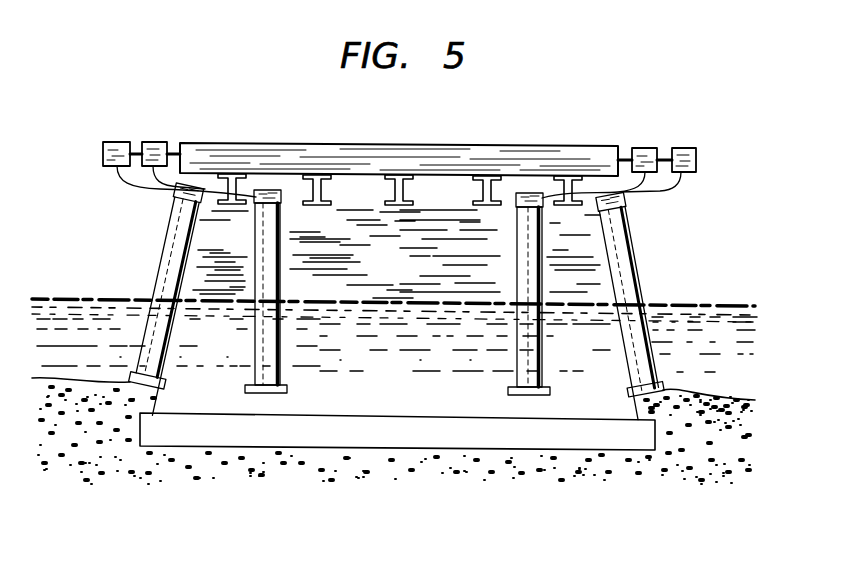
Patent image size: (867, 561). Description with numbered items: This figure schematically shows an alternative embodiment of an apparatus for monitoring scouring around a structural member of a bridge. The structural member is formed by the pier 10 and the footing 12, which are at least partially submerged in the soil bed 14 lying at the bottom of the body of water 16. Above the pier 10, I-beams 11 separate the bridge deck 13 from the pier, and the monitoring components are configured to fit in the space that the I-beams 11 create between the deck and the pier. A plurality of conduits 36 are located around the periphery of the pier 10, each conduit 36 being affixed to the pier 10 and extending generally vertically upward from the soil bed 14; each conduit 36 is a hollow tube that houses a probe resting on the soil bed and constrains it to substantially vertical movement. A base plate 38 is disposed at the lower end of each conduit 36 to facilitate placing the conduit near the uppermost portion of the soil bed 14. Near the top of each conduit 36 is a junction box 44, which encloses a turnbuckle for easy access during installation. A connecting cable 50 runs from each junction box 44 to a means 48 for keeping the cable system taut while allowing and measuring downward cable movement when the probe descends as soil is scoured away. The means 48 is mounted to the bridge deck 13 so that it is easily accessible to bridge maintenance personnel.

The pier 10 is at (408, 281).
The I-beams 11 is at (390, 205).
The footing 12 is at (373, 413).
The bridge deck 13 is at (474, 146).
The soil bed 14 is at (700, 470).
The body of water 16 is at (742, 370).
The conduit 36 is at (260, 343).
The base plate 38 is at (253, 397).
The junction box 44 is at (258, 203).
The means for keeping cable taut 48 is at (153, 142).
The connecting cable 50 is at (133, 168).